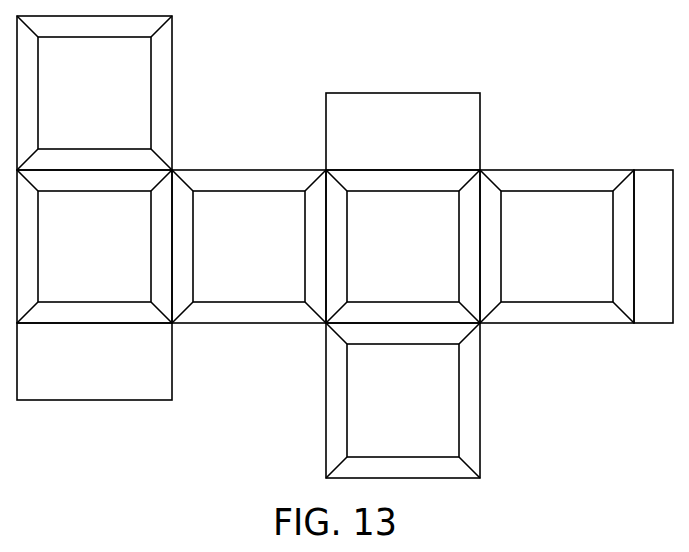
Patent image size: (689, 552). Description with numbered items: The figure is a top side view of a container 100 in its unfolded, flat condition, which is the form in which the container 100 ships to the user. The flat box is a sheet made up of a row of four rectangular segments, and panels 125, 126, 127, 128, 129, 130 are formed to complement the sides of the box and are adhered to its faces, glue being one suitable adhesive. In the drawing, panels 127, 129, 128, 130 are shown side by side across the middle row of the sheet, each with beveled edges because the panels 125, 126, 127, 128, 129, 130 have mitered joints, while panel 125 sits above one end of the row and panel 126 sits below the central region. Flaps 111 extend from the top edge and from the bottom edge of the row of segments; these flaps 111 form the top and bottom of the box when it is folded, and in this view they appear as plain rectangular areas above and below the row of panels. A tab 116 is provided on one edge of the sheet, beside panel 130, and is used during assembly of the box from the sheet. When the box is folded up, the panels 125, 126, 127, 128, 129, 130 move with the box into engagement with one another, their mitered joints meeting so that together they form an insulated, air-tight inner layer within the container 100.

The container 100 is at (345, 247).
The flaps 111 is at (385, 142).
The tab 116 is at (654, 304).
The panel 125 is at (78, 105).
The panel 126 is at (385, 412).
The panel 127 is at (78, 258).
The panel 128 is at (385, 258).
The panel 129 is at (230, 258).
The panel 130 is at (537, 258).